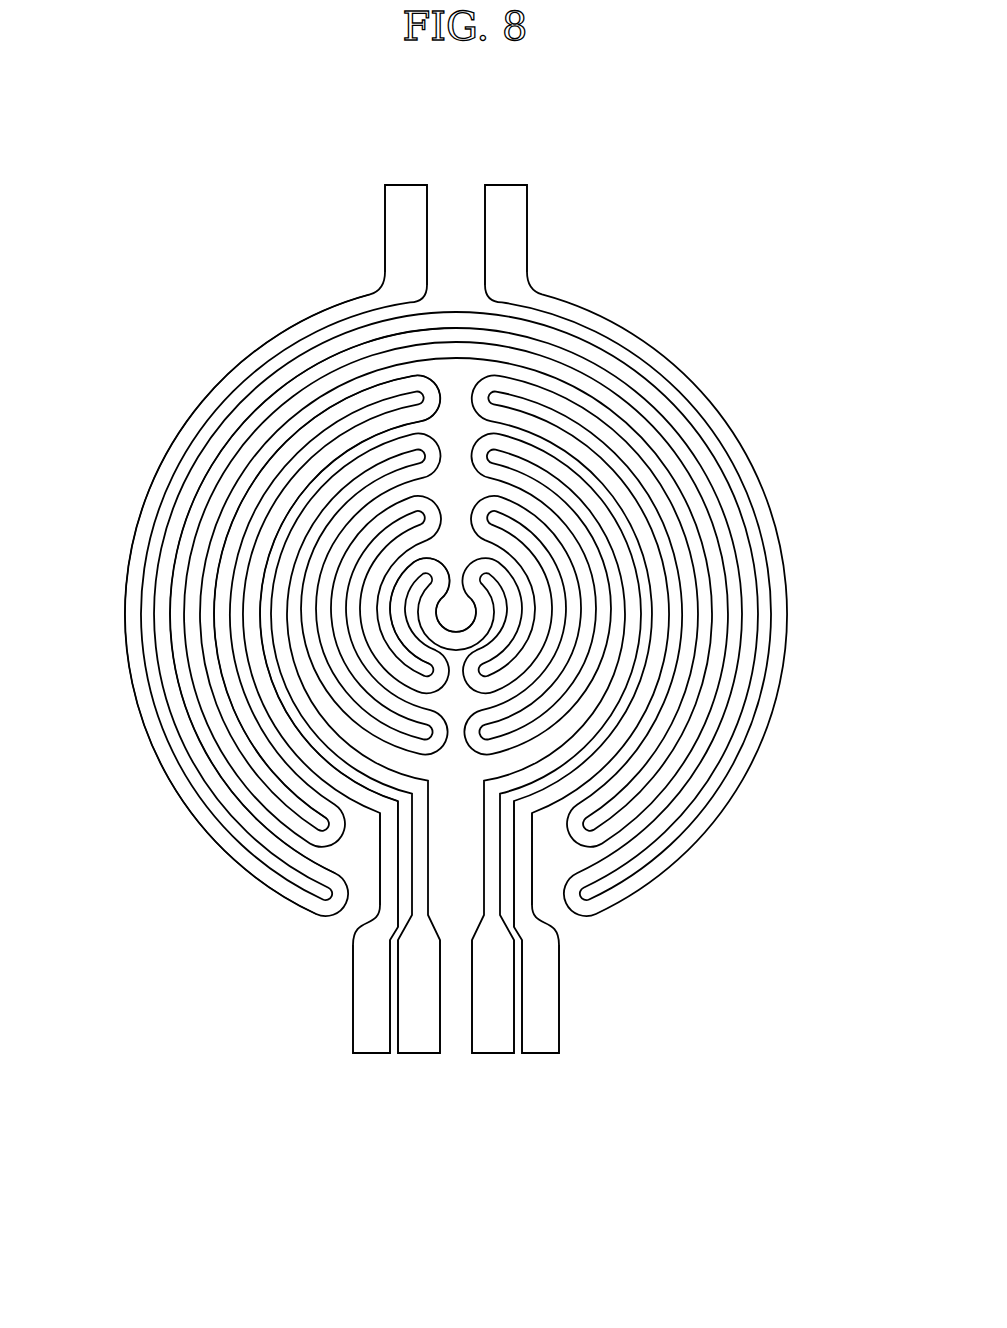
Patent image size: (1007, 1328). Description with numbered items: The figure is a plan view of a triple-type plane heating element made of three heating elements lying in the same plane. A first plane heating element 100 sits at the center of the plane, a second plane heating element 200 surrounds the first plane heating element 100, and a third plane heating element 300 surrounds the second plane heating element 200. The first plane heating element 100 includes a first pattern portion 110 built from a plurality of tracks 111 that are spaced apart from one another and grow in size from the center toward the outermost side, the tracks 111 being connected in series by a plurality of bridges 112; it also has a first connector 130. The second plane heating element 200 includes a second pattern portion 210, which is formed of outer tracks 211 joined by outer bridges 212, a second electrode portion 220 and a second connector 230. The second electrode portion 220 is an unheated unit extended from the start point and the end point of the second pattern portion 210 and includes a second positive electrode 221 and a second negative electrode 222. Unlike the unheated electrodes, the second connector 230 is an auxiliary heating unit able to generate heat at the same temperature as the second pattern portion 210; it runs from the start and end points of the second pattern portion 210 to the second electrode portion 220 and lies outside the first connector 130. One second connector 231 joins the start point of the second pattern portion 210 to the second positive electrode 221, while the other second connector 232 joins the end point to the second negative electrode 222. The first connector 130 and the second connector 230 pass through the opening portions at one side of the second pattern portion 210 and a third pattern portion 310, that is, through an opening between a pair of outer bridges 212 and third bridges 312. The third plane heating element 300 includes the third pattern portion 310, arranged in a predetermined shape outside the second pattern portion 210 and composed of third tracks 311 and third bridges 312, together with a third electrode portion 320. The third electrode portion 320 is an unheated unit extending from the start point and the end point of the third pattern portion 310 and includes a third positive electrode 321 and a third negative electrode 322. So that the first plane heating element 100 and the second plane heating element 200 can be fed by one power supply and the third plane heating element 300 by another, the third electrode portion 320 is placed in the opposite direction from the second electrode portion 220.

The first plane heating element 100 is at (622, 505).
The first pattern portion 110 is at (326, 786).
The tracks 111 is at (400, 600).
The bridges 112 is at (438, 562).
The first connector 130 is at (447, 845).
The second plane heating element 200 is at (735, 548).
The second pattern portion 210 is at (253, 559).
The outer tracks 211 is at (313, 423).
The outer bridges 212 is at (427, 380).
The second electrode portion 220 is at (459, 1060).
The second positive electrode 221 is at (375, 1055).
The second negative electrode 222 is at (544, 1042).
The second connector 230 is at (400, 976).
The second connector 231 is at (390, 880).
The second connector 232 is at (523, 880).
The third plane heating element 300 is at (800, 634).
The third pattern portion 310 is at (283, 623).
The third tracks 311 is at (257, 867).
The third bridges 312 is at (330, 902).
The third electrode portion 320 is at (457, 173).
The third positive electrode 321 is at (407, 185).
The third negative electrode 322 is at (506, 192).